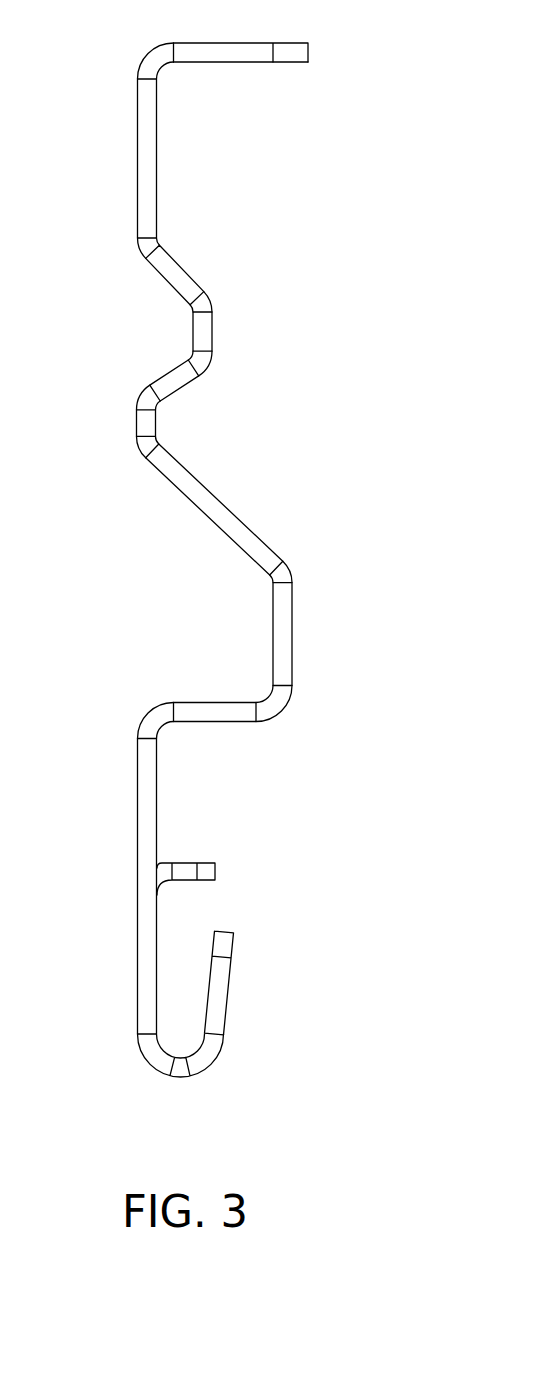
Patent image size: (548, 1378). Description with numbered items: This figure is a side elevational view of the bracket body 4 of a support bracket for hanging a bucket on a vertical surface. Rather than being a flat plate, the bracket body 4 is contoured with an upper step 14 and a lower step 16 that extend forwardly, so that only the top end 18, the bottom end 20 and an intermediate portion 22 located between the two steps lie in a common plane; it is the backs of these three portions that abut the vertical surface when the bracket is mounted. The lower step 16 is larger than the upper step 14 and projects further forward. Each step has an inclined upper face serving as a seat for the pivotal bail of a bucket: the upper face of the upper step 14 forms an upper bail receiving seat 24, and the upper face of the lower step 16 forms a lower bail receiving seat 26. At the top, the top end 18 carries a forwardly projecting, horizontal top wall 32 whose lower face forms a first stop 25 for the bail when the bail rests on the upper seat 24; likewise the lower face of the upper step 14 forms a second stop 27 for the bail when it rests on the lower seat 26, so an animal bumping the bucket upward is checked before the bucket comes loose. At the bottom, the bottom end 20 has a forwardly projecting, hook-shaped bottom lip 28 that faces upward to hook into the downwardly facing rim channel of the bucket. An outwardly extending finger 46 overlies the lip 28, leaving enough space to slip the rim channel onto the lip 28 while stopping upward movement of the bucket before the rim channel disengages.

The bracket body 4 is at (333, 312).
The upper step 14 is at (212, 333).
The lower step 16 is at (293, 627).
The top end 18 is at (137, 135).
The bottom end 20 is at (137, 852).
The intermediate portion 22 is at (137, 420).
The upper bail receiving seat 24 is at (175, 258).
The first stop 25 is at (220, 63).
The lower bail receiving seat 26 is at (212, 487).
The second stop 27 is at (186, 393).
The bottom lip 28 is at (223, 1002).
The top wall 32 is at (228, 43).
The finger 46 is at (178, 862).